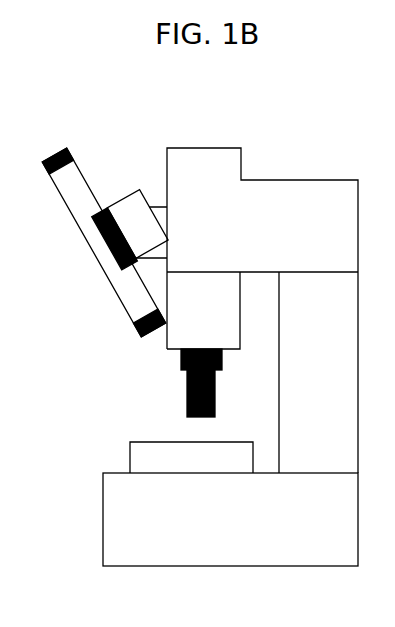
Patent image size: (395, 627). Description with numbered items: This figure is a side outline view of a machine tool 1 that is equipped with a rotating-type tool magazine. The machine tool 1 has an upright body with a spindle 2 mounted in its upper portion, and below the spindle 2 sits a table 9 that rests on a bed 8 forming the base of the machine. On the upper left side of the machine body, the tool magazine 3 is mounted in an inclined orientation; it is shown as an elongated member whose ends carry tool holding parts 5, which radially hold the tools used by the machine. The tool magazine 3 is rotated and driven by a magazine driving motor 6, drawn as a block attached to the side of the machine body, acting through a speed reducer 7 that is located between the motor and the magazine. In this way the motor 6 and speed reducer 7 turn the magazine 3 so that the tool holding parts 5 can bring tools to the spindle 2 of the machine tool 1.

The machine tool 1 is at (192, 133).
The spindle 2 is at (183, 330).
The tool magazine 3 is at (90, 187).
The tool holding parts 5 is at (72, 148).
The magazine driving motor 6 is at (126, 205).
The speed reducer 7 is at (97, 253).
The bed 8 is at (130, 537).
The table 9 is at (153, 448).